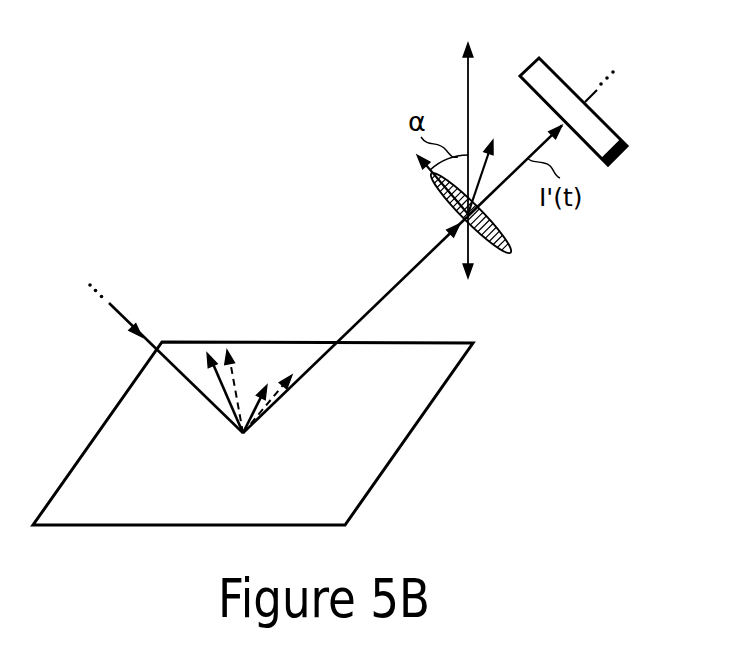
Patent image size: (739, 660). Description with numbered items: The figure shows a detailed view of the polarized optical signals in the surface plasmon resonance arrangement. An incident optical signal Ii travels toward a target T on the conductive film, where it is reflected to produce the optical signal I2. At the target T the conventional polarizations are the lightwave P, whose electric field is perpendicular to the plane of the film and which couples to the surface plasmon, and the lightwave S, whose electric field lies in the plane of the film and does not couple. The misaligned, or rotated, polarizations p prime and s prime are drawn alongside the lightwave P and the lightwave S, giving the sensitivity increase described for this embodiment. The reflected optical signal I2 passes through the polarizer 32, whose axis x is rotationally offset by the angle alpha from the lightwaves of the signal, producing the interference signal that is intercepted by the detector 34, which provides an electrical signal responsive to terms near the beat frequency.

The polarizer 32 is at (512, 250).
The detector 34 is at (620, 160).
The target T is at (242, 435).
The incident optical signal Ii is at (122, 317).
The optical signal I2 is at (421, 262).
The axis of the polarizer x is at (458, 159).
The lightwave p P is at (205, 358).
The lightwave s S is at (262, 390).